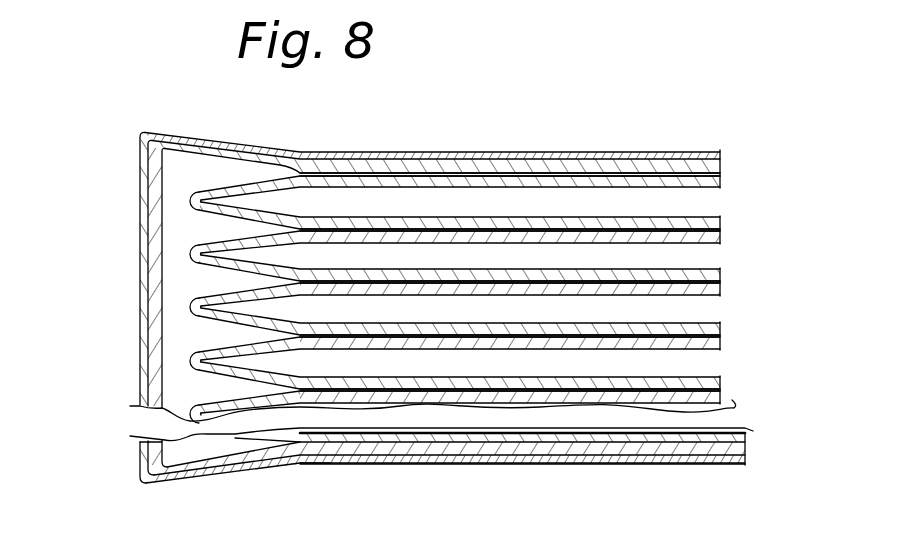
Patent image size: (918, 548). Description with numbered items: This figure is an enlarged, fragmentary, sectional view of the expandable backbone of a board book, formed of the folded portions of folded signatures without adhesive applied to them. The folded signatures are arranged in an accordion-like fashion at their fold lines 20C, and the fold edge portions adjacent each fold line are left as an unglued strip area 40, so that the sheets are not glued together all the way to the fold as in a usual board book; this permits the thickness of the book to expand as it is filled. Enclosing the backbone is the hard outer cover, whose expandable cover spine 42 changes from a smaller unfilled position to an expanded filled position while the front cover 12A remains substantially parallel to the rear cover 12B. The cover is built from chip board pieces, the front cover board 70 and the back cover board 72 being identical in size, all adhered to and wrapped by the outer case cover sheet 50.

The front cover 12A is at (484, 152).
The rear cover 12B is at (455, 465).
The fold line 20C is at (191, 200).
The unglued strip area 40 is at (224, 186).
The expandable cover spine 42 is at (144, 133).
The case cover sheet 50 is at (363, 152).
The front cover board 70 is at (623, 171).
The back cover board 72 is at (727, 455).